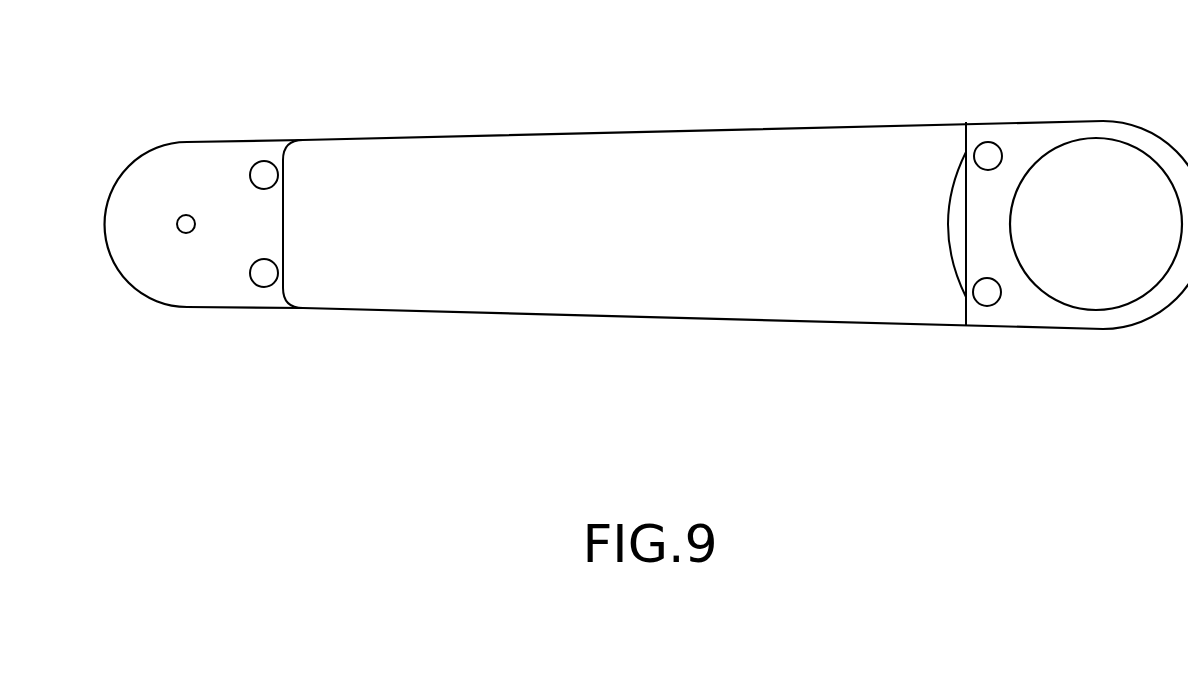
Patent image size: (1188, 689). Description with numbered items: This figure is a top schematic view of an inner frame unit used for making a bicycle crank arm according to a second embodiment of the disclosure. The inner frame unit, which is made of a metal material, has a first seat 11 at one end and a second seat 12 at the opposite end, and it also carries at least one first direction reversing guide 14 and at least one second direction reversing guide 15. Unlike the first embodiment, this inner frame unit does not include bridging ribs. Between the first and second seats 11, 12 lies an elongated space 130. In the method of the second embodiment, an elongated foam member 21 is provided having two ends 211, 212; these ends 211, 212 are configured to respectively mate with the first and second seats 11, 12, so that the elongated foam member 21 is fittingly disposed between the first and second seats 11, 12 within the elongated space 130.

The first seat 11 is at (1120, 105).
The second seat 12 is at (167, 195).
The first direction reversing guide 14 is at (988, 290).
The second direction reversing guide 15 is at (260, 259).
The elongated foam member 21 is at (748, 288).
The elongated space 130 is at (588, 150).
The end of the elongated foam member 211 is at (948, 140).
The end of the elongated foam member 212 is at (305, 195).